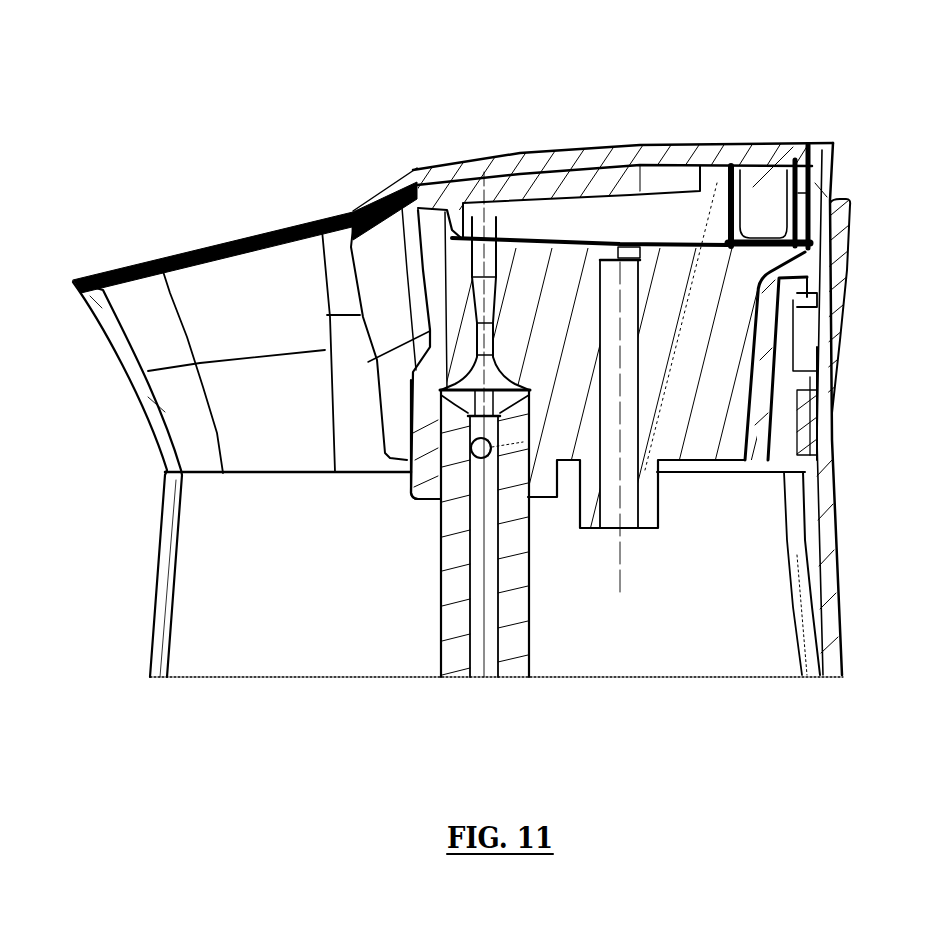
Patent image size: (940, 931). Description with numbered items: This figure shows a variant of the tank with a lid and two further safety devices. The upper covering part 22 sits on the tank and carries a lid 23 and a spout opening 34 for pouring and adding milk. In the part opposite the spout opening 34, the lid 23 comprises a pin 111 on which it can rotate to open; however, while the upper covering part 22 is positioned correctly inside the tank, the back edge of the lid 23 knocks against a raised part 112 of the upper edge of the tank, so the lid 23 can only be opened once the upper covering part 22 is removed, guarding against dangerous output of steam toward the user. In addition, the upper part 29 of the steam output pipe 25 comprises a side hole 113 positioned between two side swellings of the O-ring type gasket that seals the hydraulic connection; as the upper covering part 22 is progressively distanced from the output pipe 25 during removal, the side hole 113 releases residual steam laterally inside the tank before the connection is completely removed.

The upper covering part 22 is at (695, 338).
The lid 23 is at (633, 150).
The steam output pipe 25 is at (457, 627).
The upper part of the steam output pipe 29 is at (413, 458).
The spout opening 34 is at (128, 288).
The pin 111 is at (736, 225).
The raised part 112 is at (817, 188).
The side hole 113 is at (481, 452).